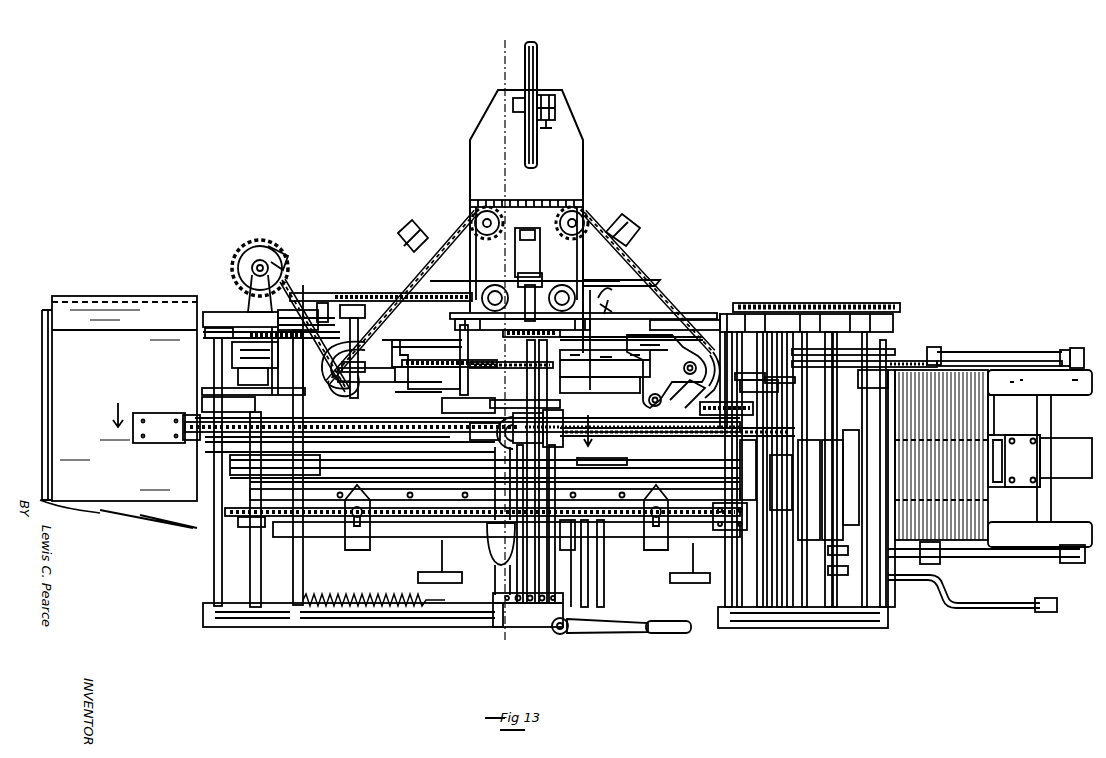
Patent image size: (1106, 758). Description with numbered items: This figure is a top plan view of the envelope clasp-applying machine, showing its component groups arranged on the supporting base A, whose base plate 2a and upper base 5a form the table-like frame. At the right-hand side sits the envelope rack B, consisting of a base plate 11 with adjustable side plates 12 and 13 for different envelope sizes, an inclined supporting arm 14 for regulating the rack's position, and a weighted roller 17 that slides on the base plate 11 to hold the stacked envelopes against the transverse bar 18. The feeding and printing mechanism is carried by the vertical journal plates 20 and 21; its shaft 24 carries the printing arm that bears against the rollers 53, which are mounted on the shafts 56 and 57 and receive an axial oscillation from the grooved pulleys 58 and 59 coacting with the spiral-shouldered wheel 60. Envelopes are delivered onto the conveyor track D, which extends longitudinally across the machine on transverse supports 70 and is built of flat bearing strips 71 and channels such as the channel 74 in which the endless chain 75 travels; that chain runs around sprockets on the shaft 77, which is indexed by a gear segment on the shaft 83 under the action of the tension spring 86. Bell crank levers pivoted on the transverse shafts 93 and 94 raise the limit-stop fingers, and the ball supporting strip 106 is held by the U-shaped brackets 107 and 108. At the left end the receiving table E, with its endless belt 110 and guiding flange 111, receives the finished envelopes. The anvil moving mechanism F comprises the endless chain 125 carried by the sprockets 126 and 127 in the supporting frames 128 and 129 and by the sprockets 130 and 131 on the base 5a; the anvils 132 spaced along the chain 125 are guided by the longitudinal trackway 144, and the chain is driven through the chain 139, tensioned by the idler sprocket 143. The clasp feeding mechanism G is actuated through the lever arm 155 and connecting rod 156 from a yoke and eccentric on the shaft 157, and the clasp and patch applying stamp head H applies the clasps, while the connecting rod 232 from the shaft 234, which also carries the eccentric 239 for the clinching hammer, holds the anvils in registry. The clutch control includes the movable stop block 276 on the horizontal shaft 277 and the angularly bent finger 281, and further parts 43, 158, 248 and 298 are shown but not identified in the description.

The vertical journal plate 21 is at (509, 40).
The upper base 5a is at (572, 170).
The sprocket 130 is at (472, 210).
The sprocket 131 is at (580, 204).
The anvil 132 is at (408, 228).
The endless chain 125 is at (608, 280).
The anvil moving mechanism F is at (620, 262).
The shaft 234 is at (400, 287).
The chain 139 is at (332, 292).
The sprocket 127 is at (322, 302).
The idler sprocket 143 is at (362, 305).
The lever arm 155 is at (207, 338).
The block 298 is at (212, 390).
The connecting rod 156 is at (388, 353).
The supporting frame 129 is at (382, 340).
The bar 158 is at (430, 340).
The connecting rod 232 is at (430, 354).
The shaft 157 is at (230, 194).
The eccentric 239 is at (440, 404).
The receiving table E is at (115, 296).
The perpendicular guiding flange 111 is at (42, 320).
The endless belt 110 is at (84, 367).
The transverse bar 18 is at (354, 417).
The clasp feeding mechanism G is at (280, 440).
The clasp and patch applying stamp head H is at (523, 420).
The bar 248 is at (600, 466).
The transverse support 70 is at (642, 478).
The ball supporting strip 106 is at (495, 492).
The shaft 83 is at (303, 578).
The sprocket shaft 77 is at (248, 573).
The base plate 2a is at (415, 616).
The vertical journal plate 20 is at (805, 628).
The shaft 24 is at (800, 630).
The U-shaped bracket 108 is at (370, 542).
The transverse shaft 93 is at (444, 565).
The transverse shaft 94 is at (690, 555).
The tension spring 86 is at (378, 594).
The conveyor track D is at (576, 522).
The channel 74 is at (598, 538).
The flat intermediate bearing strip 71 is at (612, 538).
The U-shaped bracket 107 is at (648, 548).
The horizontal shaft 277 is at (585, 607).
The supporting frame 128 is at (640, 342).
The sprocket 126 is at (702, 332).
The supporting base A is at (692, 315).
The movable stop block 276 is at (618, 291).
The angularly bent finger 281 is at (621, 306).
The longitudinal trackway 144 is at (595, 398).
The endless chain 75 is at (700, 406).
The grooved pulley 58 is at (815, 314).
The wheel 60 is at (885, 358).
The grooved pulley 59 is at (838, 385).
The printing roller 53 is at (838, 450).
The plate 43 is at (730, 516).
The shaft 57 is at (840, 552).
The shaft 56 is at (840, 572).
The envelope rack B is at (978, 431).
The adjustable side plate 12 is at (1020, 370).
The weighted roller 17 is at (1033, 453).
The base plate 11 is at (1070, 470).
The adjustable side plate 13 is at (1050, 562).
The inclined supporting arm 14 is at (980, 606).